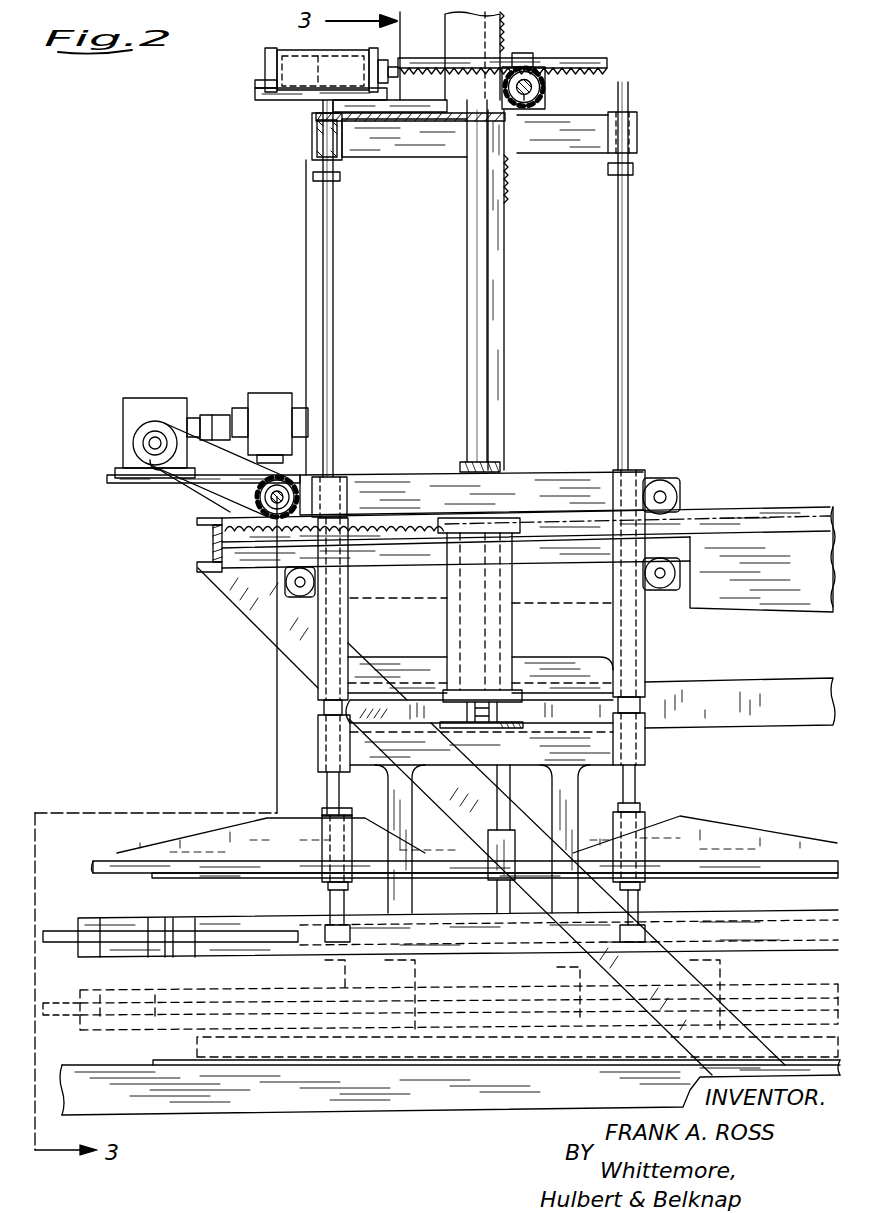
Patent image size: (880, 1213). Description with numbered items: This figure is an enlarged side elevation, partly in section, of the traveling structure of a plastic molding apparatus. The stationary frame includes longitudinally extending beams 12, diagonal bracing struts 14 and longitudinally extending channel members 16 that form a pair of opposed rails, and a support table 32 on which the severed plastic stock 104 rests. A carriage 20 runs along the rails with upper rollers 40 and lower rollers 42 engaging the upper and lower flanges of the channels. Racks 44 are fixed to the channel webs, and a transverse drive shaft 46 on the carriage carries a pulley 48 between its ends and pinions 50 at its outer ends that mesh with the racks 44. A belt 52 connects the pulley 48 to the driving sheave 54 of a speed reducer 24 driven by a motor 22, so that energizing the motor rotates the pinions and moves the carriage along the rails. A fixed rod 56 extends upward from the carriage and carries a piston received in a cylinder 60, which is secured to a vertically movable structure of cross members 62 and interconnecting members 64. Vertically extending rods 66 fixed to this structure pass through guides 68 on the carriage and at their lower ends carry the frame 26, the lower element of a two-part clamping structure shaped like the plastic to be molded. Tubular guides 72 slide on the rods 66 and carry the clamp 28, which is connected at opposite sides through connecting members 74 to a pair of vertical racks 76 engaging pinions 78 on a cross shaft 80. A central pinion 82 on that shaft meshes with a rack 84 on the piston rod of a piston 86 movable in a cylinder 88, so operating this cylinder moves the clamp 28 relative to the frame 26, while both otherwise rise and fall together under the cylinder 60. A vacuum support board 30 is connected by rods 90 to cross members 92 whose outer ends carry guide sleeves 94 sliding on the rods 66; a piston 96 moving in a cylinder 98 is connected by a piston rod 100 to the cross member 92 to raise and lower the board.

The longitudinally extending beams 12 is at (700, 682).
The diagonal bracing struts 14 is at (250, 628).
The channel members 16 is at (748, 508).
The carriage 20 is at (548, 472).
The motor 22 is at (272, 393).
The speed reducer 24 is at (160, 398).
The frame 26 is at (145, 918).
The clamp 28 is at (93, 866).
The vacuum support board 30 is at (222, 930).
The support table 32 is at (265, 1115).
The upper rollers 40 is at (668, 480).
The lower rollers 42 is at (678, 580).
The racks 44 is at (213, 545).
The transverse drive shaft 46 is at (338, 498).
The pulley 48 is at (232, 507).
The pinions 50 is at (292, 475).
The belt 52 is at (205, 487).
The driving sheave 54 is at (133, 443).
The fixed rod 56 is at (468, 268).
The cylinder 60 is at (445, 36).
The cross members 62 is at (312, 142).
The interconnecting members 64 is at (418, 157).
The vertically extending rods 66 is at (334, 278).
The guides 68 is at (646, 640).
The tubular guides 72 is at (378, 802).
The connecting members 74 is at (490, 833).
The racks 76 is at (508, 183).
The pinions 78 is at (530, 102).
The cross shaft 80 is at (536, 100).
The central pinion 82 is at (546, 83).
The rack 84 is at (598, 58).
The piston 86 is at (292, 58).
The cylinder 88 is at (277, 68).
The rods 90 is at (560, 788).
The cross members 92 is at (588, 716).
The guide sleeves 94 is at (322, 750).
The piston 96 is at (433, 558).
The cylinder 98 is at (513, 633).
The piston rod 100 is at (447, 630).
The severed plastic stock 104 is at (345, 1062).